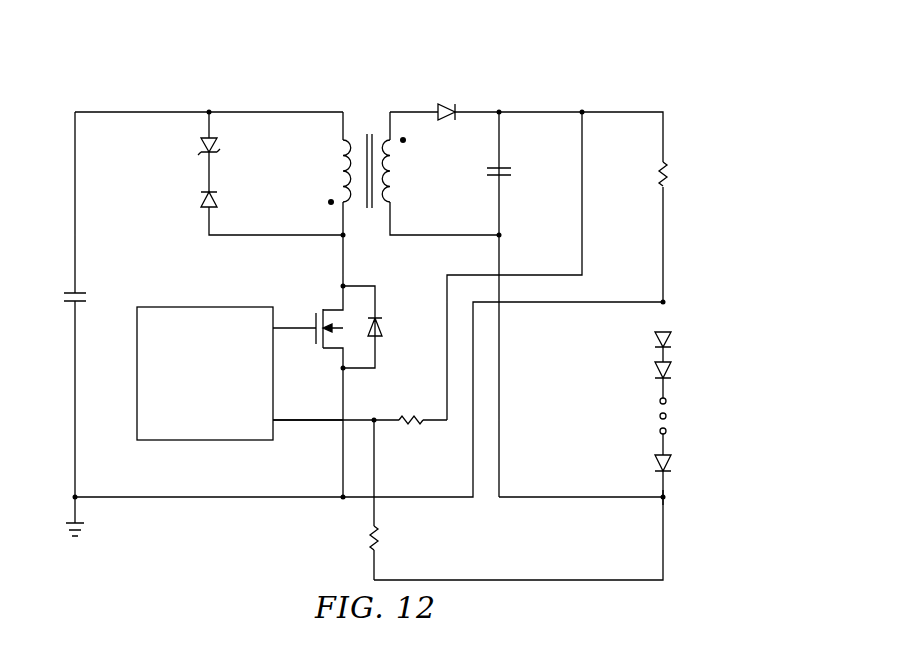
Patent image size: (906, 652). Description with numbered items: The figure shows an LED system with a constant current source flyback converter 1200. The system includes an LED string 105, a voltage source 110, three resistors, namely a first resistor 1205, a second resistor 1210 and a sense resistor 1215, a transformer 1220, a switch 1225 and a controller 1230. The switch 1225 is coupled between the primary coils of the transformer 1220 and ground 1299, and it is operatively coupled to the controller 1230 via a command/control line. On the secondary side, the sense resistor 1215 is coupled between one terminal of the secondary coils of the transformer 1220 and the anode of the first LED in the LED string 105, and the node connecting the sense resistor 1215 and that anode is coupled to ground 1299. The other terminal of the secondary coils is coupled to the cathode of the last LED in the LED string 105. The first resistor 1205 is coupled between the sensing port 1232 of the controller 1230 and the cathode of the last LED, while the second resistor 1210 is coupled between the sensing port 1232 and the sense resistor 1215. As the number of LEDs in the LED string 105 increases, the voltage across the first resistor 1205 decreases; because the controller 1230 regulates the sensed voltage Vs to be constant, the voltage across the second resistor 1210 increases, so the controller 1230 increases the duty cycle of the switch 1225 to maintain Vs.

The LED system with a constant current source flyback converter 1200 is at (618, 80).
The voltage source 110 is at (88, 300).
The transformer 1220 is at (343, 164).
The switch 1225 is at (339, 300).
The controller 1230 is at (231, 408).
The sensing port 1232 is at (278, 422).
The resistor R2 1210 is at (418, 432).
The resistor R1 1205 is at (370, 540).
The resistor Rs 1215 is at (668, 168).
The LED string 105 is at (689, 367).
The ground 1299 is at (667, 500).